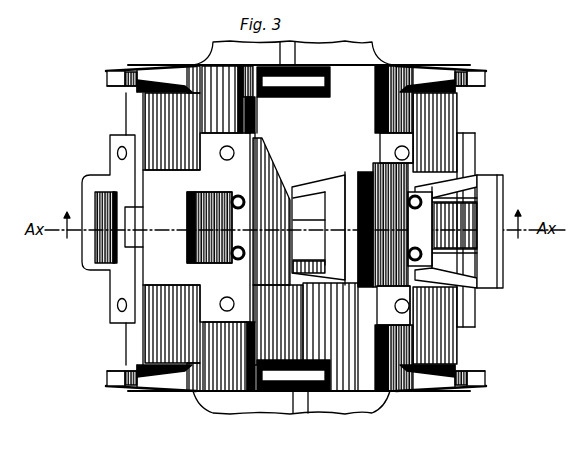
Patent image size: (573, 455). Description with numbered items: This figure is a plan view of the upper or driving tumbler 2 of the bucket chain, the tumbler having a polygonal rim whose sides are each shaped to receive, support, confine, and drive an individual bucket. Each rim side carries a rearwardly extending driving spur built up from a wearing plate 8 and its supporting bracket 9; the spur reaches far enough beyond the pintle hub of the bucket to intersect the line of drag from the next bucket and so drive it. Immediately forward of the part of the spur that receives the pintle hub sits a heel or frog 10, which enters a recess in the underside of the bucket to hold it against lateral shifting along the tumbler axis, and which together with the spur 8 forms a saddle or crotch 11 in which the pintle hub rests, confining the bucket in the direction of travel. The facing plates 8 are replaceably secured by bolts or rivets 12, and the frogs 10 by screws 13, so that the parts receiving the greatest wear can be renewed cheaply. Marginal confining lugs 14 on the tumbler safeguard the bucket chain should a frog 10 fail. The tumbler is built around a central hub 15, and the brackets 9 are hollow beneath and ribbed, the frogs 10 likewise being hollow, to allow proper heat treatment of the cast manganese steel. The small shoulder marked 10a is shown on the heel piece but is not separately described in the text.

The upper tumbler 2 is at (300, 228).
The wearing plate 8 is at (520, 191).
The supporting bracket 9 is at (322, 181).
The frog 10 is at (103, 222).
The shoulder notch 10a is at (135, 230).
The saddle 11 is at (105, 215).
The bolts or rivets 12 is at (117, 151).
The screws 13 is at (234, 208).
The marginal confining lugs 14 is at (160, 76).
The hub 15 is at (320, 48).